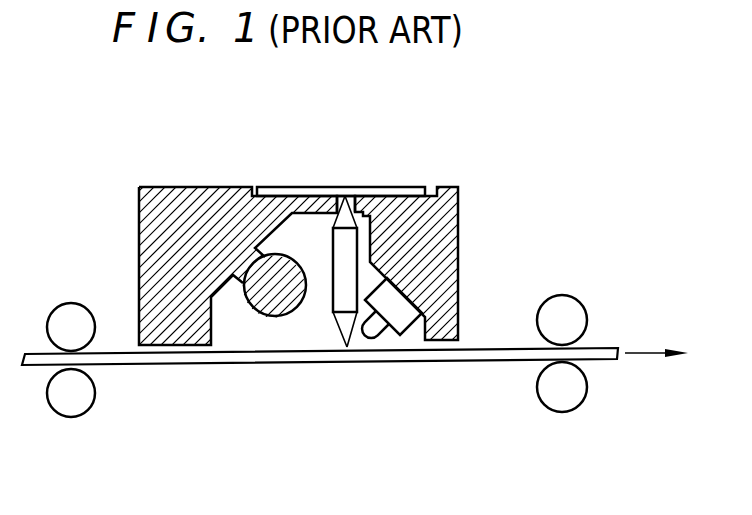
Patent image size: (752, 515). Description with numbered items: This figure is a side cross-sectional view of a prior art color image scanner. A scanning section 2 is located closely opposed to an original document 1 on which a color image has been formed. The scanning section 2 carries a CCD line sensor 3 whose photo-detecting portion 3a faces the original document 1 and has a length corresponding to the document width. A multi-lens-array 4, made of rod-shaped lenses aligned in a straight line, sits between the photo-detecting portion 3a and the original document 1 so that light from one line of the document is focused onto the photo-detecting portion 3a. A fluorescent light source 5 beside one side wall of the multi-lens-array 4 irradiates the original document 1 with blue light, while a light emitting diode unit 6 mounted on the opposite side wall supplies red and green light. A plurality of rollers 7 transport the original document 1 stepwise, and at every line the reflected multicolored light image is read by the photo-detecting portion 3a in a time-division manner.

The original document 1 is at (245, 362).
The scanning section 2 is at (453, 187).
The CCD line sensor 3 is at (385, 187).
The photo-detecting portion 3a is at (345, 190).
The multi-lens-array 4 is at (347, 250).
The fluorescent light source 5 is at (272, 278).
The light emitting diode unit 6 is at (390, 303).
The rollers 7 is at (71, 303).